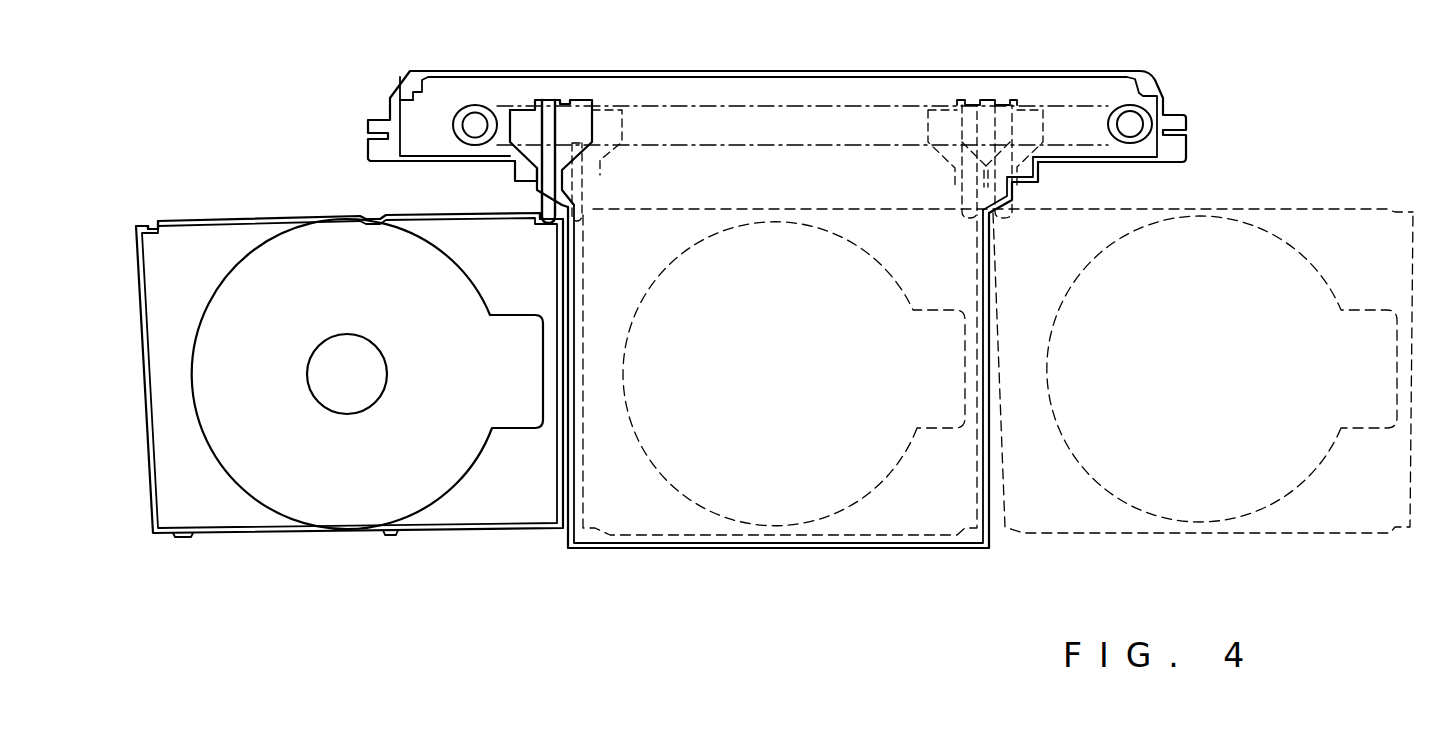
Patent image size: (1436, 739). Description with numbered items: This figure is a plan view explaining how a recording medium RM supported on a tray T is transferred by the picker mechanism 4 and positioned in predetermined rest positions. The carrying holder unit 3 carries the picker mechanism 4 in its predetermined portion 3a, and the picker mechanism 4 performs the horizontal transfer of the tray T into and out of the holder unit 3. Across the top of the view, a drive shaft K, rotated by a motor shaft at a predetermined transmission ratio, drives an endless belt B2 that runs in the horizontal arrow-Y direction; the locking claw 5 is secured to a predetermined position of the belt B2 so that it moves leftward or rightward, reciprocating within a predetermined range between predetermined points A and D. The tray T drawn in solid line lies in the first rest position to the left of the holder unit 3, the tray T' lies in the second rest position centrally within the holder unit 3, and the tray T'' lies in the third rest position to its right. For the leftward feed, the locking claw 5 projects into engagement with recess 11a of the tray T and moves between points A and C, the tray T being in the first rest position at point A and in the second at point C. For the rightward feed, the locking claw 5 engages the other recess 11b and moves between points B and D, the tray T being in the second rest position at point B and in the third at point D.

The carrying holder unit 3 is at (750, 553).
The predetermined portion 3a is at (440, 88).
The picker mechanism 4 is at (1173, 84).
The locking claw 5 is at (547, 214).
The recess 11a is at (548, 235).
The recess 11b is at (150, 222).
The drive shaft K is at (475, 120).
The predetermined point A is at (548, 100).
The predetermined point B is at (583, 100).
The predetermined point C is at (969, 100).
The predetermined point D is at (1004, 100).
The endless belt B2 is at (815, 147).
The arrow-Y direction Y is at (778, 29).
The tray T is at (349, 414).
The tray in second rest position T' is at (998, 412).
The tray in third rest position T'' is at (1203, 413).
The recording medium RM is at (360, 500).